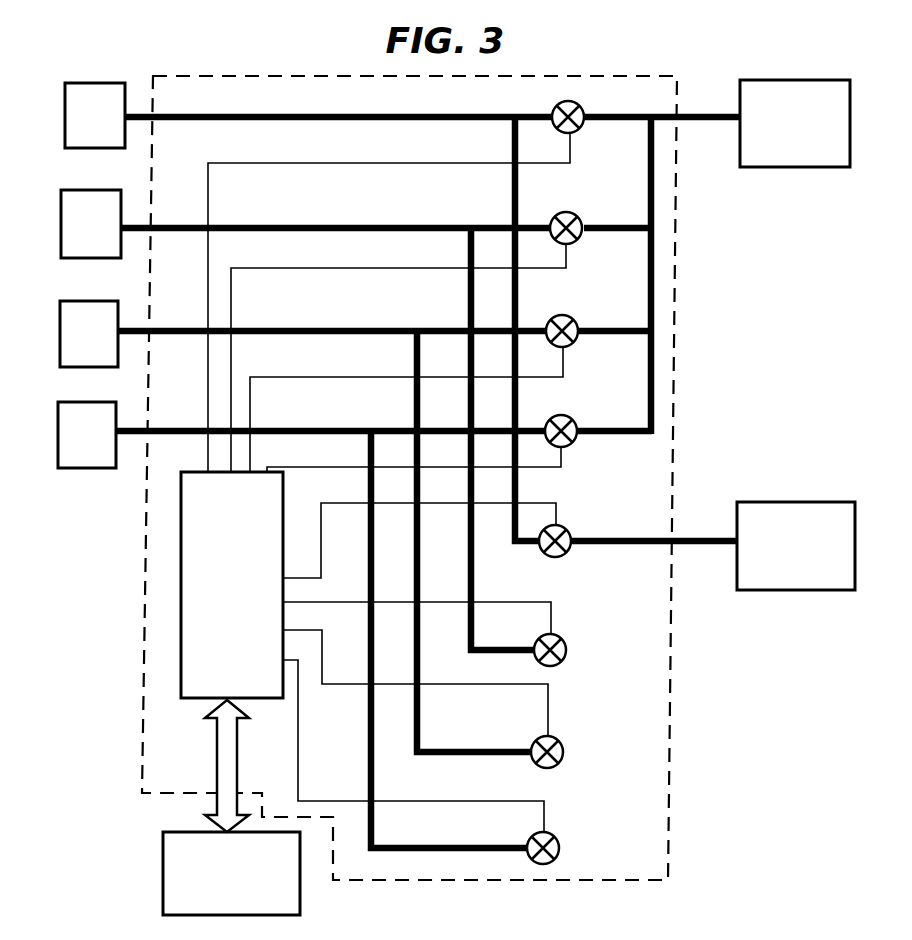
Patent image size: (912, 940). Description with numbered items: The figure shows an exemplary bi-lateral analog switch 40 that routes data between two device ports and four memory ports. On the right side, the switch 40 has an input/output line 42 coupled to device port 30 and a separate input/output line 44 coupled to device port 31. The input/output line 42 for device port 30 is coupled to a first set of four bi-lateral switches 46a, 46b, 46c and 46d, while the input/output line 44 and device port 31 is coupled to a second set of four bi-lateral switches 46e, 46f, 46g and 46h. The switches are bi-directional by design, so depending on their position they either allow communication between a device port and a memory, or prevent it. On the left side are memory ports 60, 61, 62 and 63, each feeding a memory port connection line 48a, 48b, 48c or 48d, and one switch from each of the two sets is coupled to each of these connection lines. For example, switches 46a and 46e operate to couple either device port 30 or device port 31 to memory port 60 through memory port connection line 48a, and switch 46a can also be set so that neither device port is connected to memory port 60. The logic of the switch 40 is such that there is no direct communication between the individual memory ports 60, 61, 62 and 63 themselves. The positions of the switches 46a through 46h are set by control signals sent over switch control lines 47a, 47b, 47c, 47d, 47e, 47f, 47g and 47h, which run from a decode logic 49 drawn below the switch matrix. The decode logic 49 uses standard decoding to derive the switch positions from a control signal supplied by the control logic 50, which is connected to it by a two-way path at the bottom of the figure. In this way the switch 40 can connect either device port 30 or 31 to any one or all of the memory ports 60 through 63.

The device port 30 is at (811, 153).
The device port 31 is at (797, 503).
The switch 40 is at (567, 76).
The input/output line 42 is at (628, 115).
The input/output line 44 is at (596, 539).
The bi-lateral switch 46a is at (579, 128).
The bi-lateral switch 46b is at (576, 240).
The bi-lateral switch 46c is at (573, 343).
The bi-lateral switch 46d is at (572, 443).
The bi-lateral switch 46e is at (567, 553).
The bi-lateral switch 46f is at (566, 656).
The bi-lateral switch 46g is at (560, 766).
The bi-lateral switch 46h is at (556, 863).
The switch control line 47a is at (383, 164).
The switch control line 47b is at (425, 271).
The switch control line 47c is at (350, 379).
The switch control line 47d is at (338, 469).
The switch control line 47e is at (340, 505).
The switch control line 47f is at (332, 601).
The switch control line 47g is at (333, 683).
The switch control line 47h is at (323, 800).
The memory port connection line 48a is at (259, 124).
The memory port connection line 48b is at (297, 233).
The memory port connection line 48c is at (277, 328).
The memory port connection line 48d is at (280, 428).
The decode logic 49 is at (198, 701).
The control logic 50 is at (163, 877).
The memory port 60 is at (72, 127).
The memory port 61 is at (70, 231).
The memory port 62 is at (72, 334).
The memory port 63 is at (68, 433).